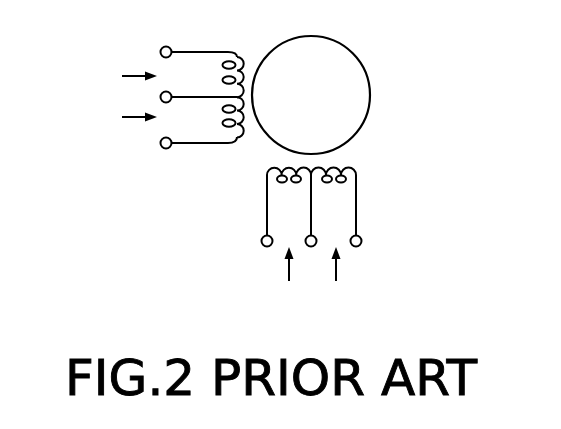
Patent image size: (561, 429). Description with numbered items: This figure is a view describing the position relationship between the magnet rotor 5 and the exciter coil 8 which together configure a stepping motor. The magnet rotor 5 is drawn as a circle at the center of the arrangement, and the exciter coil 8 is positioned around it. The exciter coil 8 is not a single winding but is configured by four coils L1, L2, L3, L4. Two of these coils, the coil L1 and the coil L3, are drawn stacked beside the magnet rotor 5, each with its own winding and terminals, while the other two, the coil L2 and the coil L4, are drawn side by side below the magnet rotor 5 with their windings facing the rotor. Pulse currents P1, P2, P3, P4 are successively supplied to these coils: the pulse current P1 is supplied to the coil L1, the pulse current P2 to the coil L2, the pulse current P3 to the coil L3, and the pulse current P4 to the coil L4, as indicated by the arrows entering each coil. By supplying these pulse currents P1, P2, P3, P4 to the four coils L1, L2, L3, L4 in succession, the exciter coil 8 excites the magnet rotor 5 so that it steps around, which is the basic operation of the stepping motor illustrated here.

The magnet rotor 5 is at (369, 77).
The exciter coil 8 is at (281, 123).
The coil L1 is at (202, 75).
The coil L2 is at (289, 207).
The coil L3 is at (202, 122).
The coil L4 is at (336, 207).
The pulse current P1 is at (124, 76).
The pulse current P2 is at (288, 285).
The pulse current P3 is at (124, 121).
The pulse current P4 is at (335, 285).